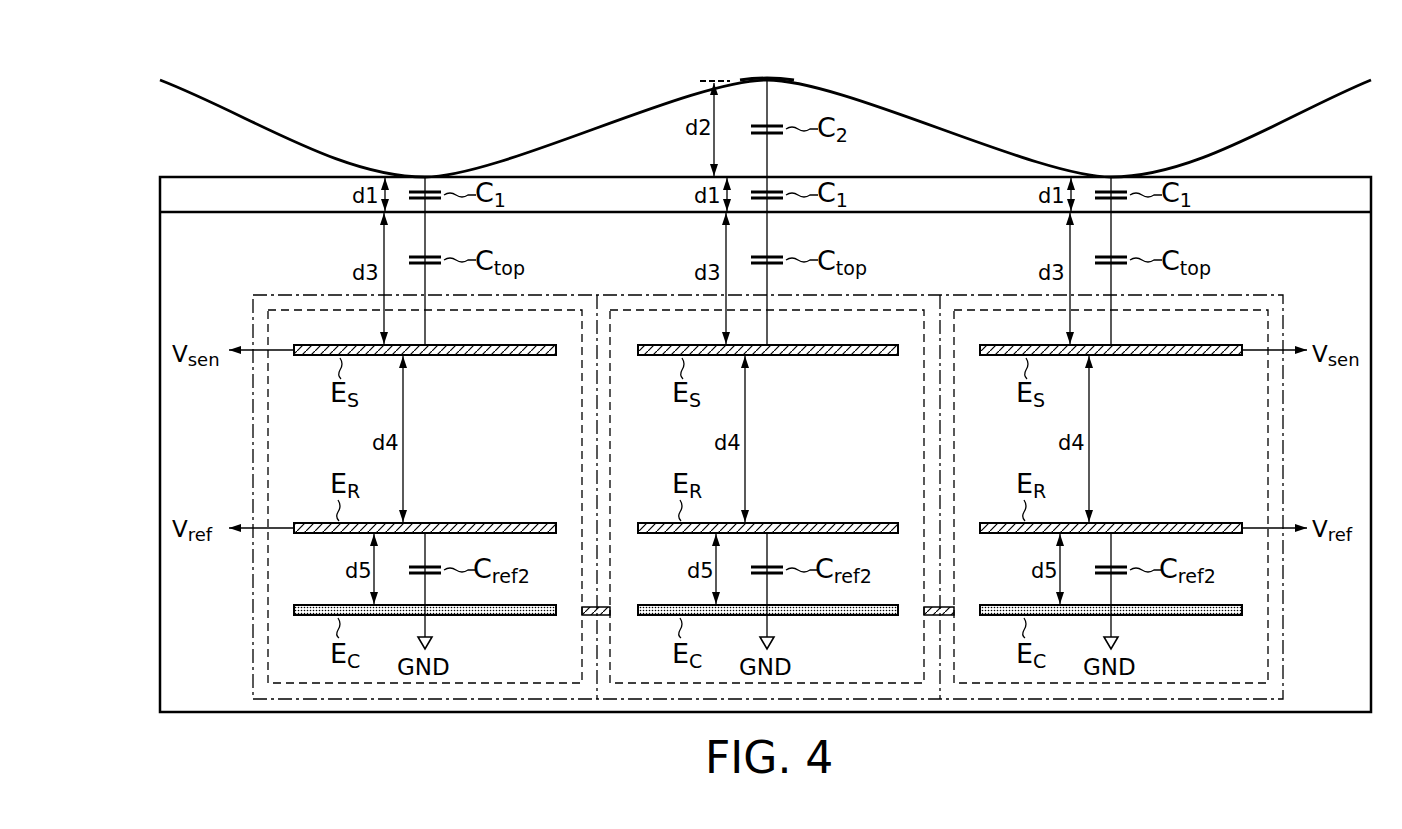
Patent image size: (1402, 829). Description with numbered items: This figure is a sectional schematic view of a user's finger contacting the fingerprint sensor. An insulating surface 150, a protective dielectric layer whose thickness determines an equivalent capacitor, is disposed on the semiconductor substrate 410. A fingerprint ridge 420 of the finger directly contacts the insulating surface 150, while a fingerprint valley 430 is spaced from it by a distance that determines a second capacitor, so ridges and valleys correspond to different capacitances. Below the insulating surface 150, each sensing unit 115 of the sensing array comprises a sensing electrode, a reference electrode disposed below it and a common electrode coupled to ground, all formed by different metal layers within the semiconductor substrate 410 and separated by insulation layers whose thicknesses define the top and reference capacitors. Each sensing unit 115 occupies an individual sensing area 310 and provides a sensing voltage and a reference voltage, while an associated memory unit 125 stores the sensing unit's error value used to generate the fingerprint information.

The insulating surface 150 is at (200, 176).
The semiconductor substrate 410 is at (198, 714).
The fingerprint ridge 420 is at (428, 163).
The fingerprint valley 430 is at (767, 75).
The sensing unit 115 is at (313, 309).
The sensing area 310 is at (567, 294).
The memory unit 125 is at (598, 607).